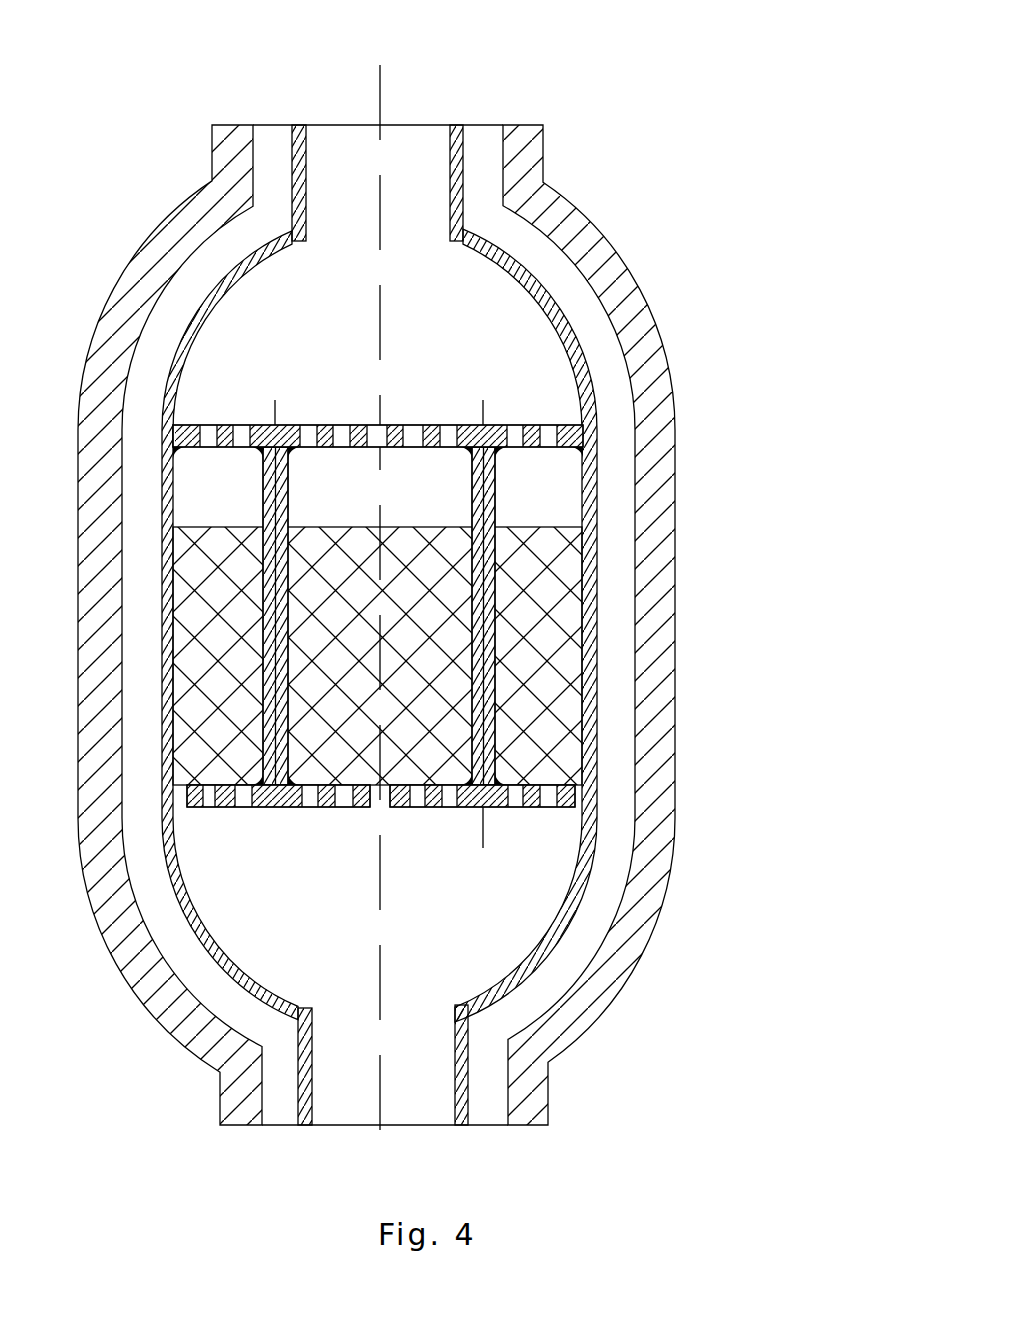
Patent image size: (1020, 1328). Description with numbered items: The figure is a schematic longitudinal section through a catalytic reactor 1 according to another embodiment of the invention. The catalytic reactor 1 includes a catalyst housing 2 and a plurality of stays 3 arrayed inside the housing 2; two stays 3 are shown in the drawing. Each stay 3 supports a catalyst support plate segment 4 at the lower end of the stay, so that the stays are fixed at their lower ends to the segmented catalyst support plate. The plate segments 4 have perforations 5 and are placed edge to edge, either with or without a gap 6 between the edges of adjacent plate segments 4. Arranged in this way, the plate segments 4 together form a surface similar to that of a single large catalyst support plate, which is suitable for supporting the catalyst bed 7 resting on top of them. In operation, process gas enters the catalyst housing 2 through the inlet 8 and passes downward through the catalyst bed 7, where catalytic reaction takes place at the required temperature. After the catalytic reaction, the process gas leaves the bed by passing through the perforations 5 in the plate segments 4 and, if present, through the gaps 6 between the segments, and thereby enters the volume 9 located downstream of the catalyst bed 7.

The catalytic reactor 1 is at (595, 220).
The catalyst housing 2 is at (560, 307).
The stay 3 is at (497, 500).
The catalyst support plate segment 4 is at (495, 810).
The perforation 5 is at (557, 810).
The gap 6 is at (380, 806).
The catalyst bed 7 is at (293, 807).
The inlet 8 is at (420, 158).
The volume downstream the catalyst bed 9 is at (298, 923).